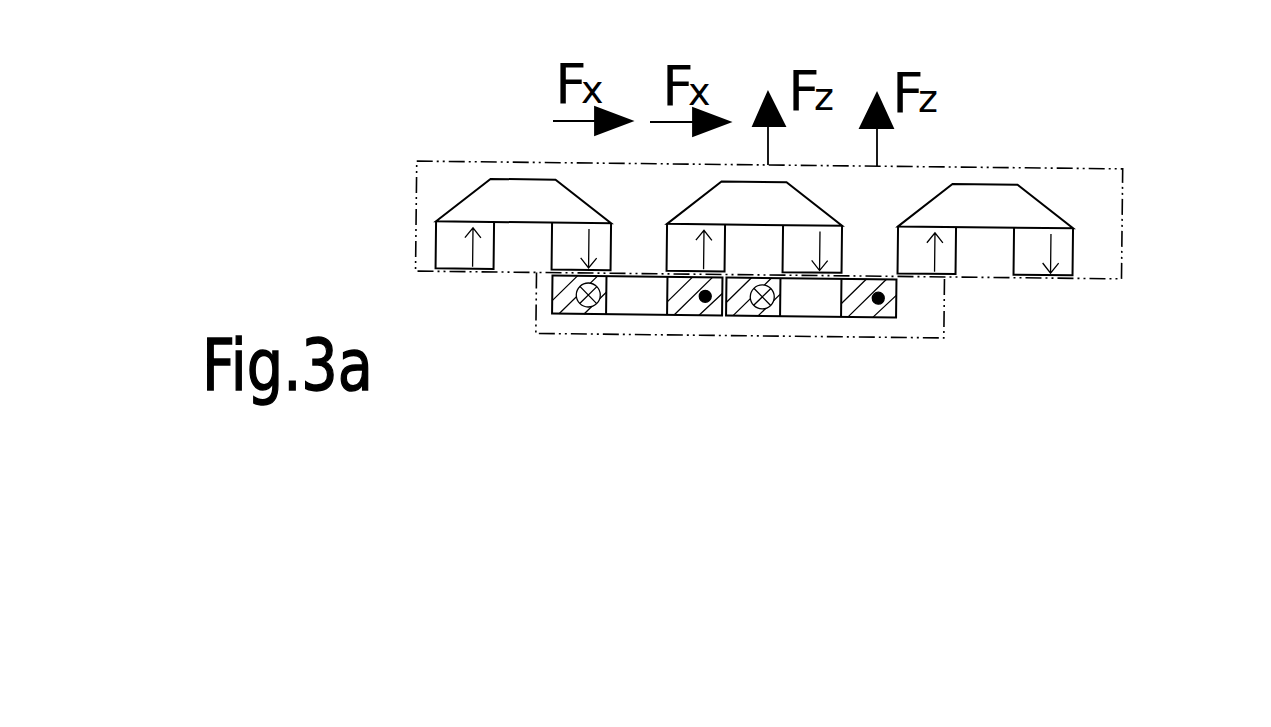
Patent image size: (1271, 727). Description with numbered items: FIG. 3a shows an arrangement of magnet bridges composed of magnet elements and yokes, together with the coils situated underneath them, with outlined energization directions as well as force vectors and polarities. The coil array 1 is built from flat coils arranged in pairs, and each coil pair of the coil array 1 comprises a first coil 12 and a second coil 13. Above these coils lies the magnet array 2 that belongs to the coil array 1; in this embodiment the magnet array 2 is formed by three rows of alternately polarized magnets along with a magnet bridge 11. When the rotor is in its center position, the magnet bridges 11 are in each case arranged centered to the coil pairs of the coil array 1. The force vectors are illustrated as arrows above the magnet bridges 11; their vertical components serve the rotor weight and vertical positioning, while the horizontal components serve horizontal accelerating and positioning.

The coil array 1 is at (934, 320).
The magnet array 2 is at (1080, 171).
The magnet bridge 11 is at (513, 193).
The first coil 12 is at (568, 313).
The second coil 13 is at (819, 318).